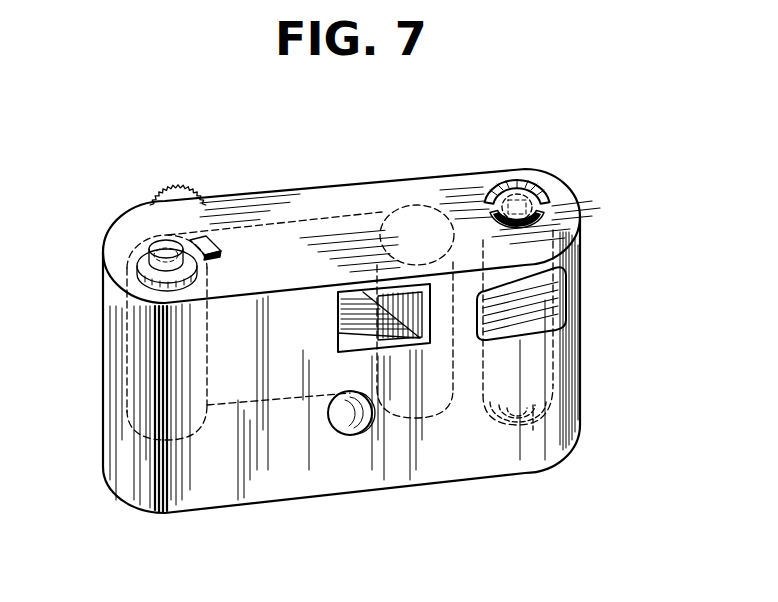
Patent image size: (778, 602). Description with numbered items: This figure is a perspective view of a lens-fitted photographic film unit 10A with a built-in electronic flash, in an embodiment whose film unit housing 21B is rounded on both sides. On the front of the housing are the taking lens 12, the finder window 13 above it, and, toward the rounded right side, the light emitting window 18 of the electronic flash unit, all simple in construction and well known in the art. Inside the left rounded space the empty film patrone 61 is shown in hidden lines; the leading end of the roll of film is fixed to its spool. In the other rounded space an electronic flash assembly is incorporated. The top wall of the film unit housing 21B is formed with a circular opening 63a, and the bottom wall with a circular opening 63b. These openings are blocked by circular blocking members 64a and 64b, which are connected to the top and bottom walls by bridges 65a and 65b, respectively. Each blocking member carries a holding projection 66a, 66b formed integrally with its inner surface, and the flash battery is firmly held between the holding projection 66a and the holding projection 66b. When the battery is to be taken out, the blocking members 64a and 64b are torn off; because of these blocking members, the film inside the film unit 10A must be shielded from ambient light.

The film unit 10A is at (412, 152).
The empty film patrone 61 is at (128, 344).
The finder window 13 is at (340, 335).
The taking lens 12 is at (338, 402).
The light emitting window 18 is at (550, 300).
The film unit housing 21B is at (302, 483).
The circular blocking member 64a is at (540, 190).
The bridge 65a is at (548, 207).
The holding projection 66a is at (527, 168).
The circular opening 63a is at (565, 219).
The circular blocking member 64b is at (540, 412).
The bridge 65b is at (482, 420).
The circular opening 63b is at (500, 440).
The holding projection 66b is at (533, 430).